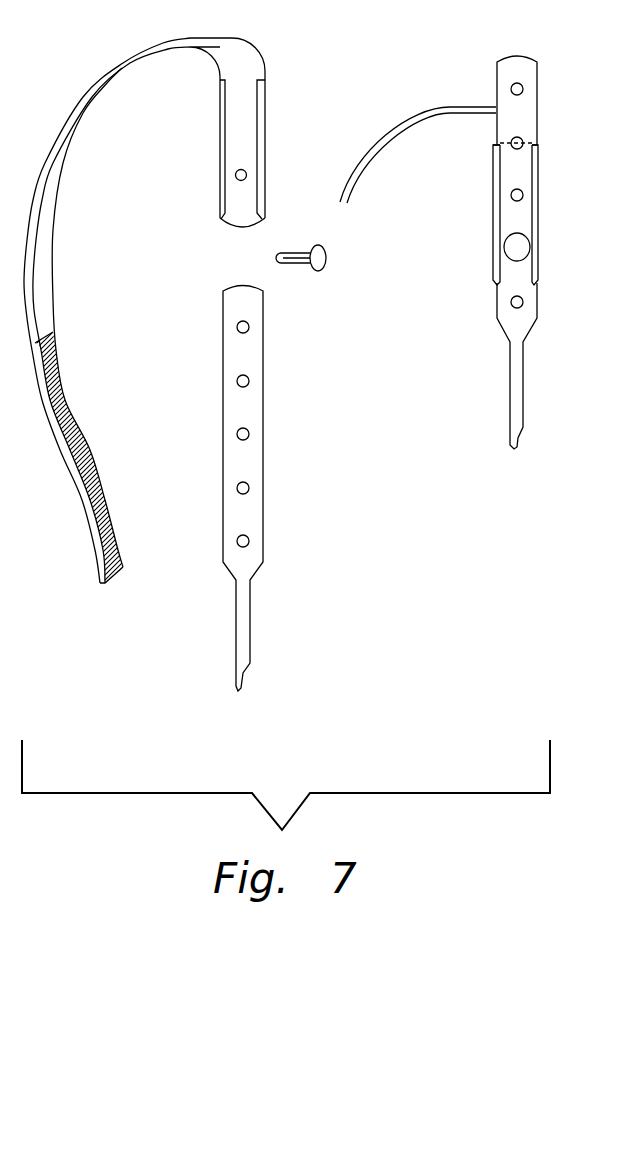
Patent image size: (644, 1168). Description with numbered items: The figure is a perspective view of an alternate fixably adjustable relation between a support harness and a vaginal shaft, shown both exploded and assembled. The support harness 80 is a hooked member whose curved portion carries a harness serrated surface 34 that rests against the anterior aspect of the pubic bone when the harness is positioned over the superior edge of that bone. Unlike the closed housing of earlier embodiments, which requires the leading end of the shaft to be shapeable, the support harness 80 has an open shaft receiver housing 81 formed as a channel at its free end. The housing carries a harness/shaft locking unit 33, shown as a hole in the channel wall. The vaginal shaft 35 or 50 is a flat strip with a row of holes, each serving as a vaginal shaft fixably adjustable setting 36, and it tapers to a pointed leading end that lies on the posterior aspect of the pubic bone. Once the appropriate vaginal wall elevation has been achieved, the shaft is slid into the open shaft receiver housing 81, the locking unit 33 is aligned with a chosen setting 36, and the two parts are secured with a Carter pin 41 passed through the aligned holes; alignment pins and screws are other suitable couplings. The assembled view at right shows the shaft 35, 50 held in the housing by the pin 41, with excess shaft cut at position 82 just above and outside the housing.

The harness/shaft locking unit 33 is at (247, 175).
The harness serrated surface 34 is at (93, 445).
The vaginal shaft 35 is at (382, 351).
The vaginal shaft fixably adjustable setting 36 is at (246, 439).
The Carter pin 41 is at (318, 272).
The vaginal shaft 50 is at (250, 612).
The support harness 80 is at (266, 97).
The open shaft receiver housing 81 is at (238, 221).
The cutting position 82 is at (538, 137).